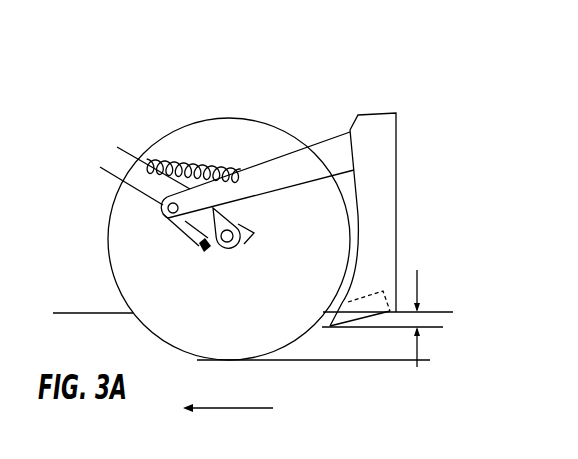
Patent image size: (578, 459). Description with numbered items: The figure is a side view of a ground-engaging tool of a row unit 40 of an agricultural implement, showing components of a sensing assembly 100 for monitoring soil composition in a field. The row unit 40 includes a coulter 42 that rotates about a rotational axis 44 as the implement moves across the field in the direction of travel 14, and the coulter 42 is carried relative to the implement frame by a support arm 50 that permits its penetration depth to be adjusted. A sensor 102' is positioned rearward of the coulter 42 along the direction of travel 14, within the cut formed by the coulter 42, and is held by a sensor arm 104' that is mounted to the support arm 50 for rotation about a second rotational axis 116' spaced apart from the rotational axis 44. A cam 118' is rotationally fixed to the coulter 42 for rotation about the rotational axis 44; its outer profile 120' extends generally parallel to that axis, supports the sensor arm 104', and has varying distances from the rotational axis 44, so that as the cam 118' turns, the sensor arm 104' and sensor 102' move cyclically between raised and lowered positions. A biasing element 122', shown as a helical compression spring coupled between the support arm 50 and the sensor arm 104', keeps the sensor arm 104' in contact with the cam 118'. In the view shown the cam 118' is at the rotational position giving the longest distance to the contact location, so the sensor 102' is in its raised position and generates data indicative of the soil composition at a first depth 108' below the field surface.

The row unit 40 is at (102, 70).
The coulter 42 is at (243, 135).
The support arm 50 is at (120, 163).
The biasing element 122' is at (194, 120).
The second rotational axis 116' is at (120, 210).
The cam actuator 118' is at (185, 269).
The outer profile 120' is at (192, 275).
The rotational axis 44 is at (254, 233).
The sensor arm 104' is at (400, 219).
The sensing assembly 100 is at (336, 102).
The first depth 108' is at (407, 308).
The sensor 102' is at (344, 345).
The direction of travel 14 is at (222, 406).